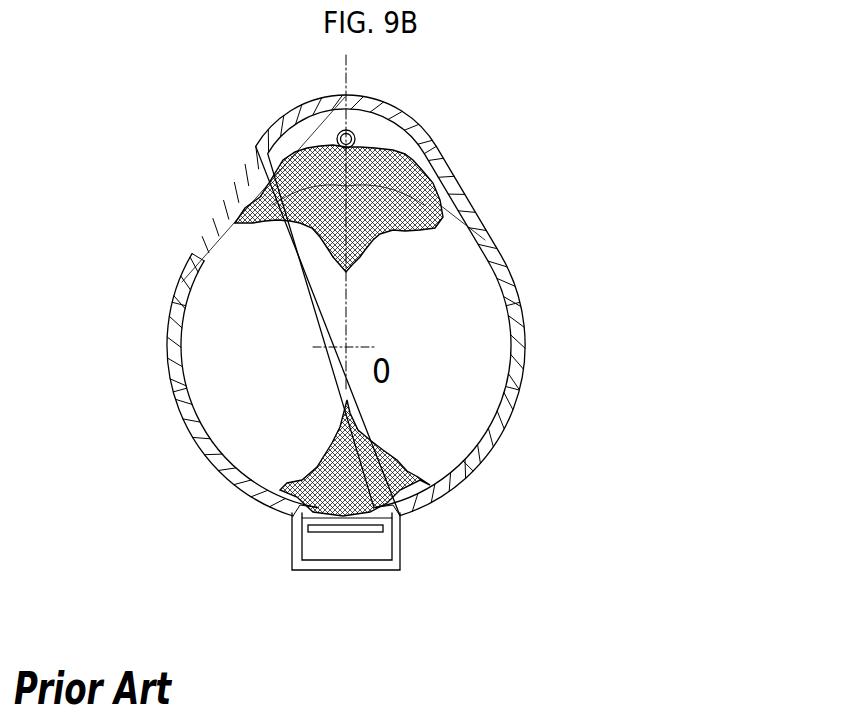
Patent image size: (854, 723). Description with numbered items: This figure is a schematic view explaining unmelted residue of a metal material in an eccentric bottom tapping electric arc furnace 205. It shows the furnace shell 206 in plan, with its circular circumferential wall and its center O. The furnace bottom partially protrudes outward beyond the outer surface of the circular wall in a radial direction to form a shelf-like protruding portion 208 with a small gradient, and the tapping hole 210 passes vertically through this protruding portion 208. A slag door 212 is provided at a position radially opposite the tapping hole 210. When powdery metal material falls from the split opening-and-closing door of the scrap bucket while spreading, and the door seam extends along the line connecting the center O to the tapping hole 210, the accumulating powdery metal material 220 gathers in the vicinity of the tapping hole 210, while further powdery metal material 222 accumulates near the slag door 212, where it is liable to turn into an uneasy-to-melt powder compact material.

The electric arc furnace 205 is at (523, 240).
The furnace shell 206 is at (173, 345).
The protruding portion 208 is at (320, 133).
The tapping hole 210 is at (352, 131).
The slag door 212 is at (330, 520).
The accumulating powdery metal material 220 is at (432, 152).
The powdery metal material 222 is at (407, 497).